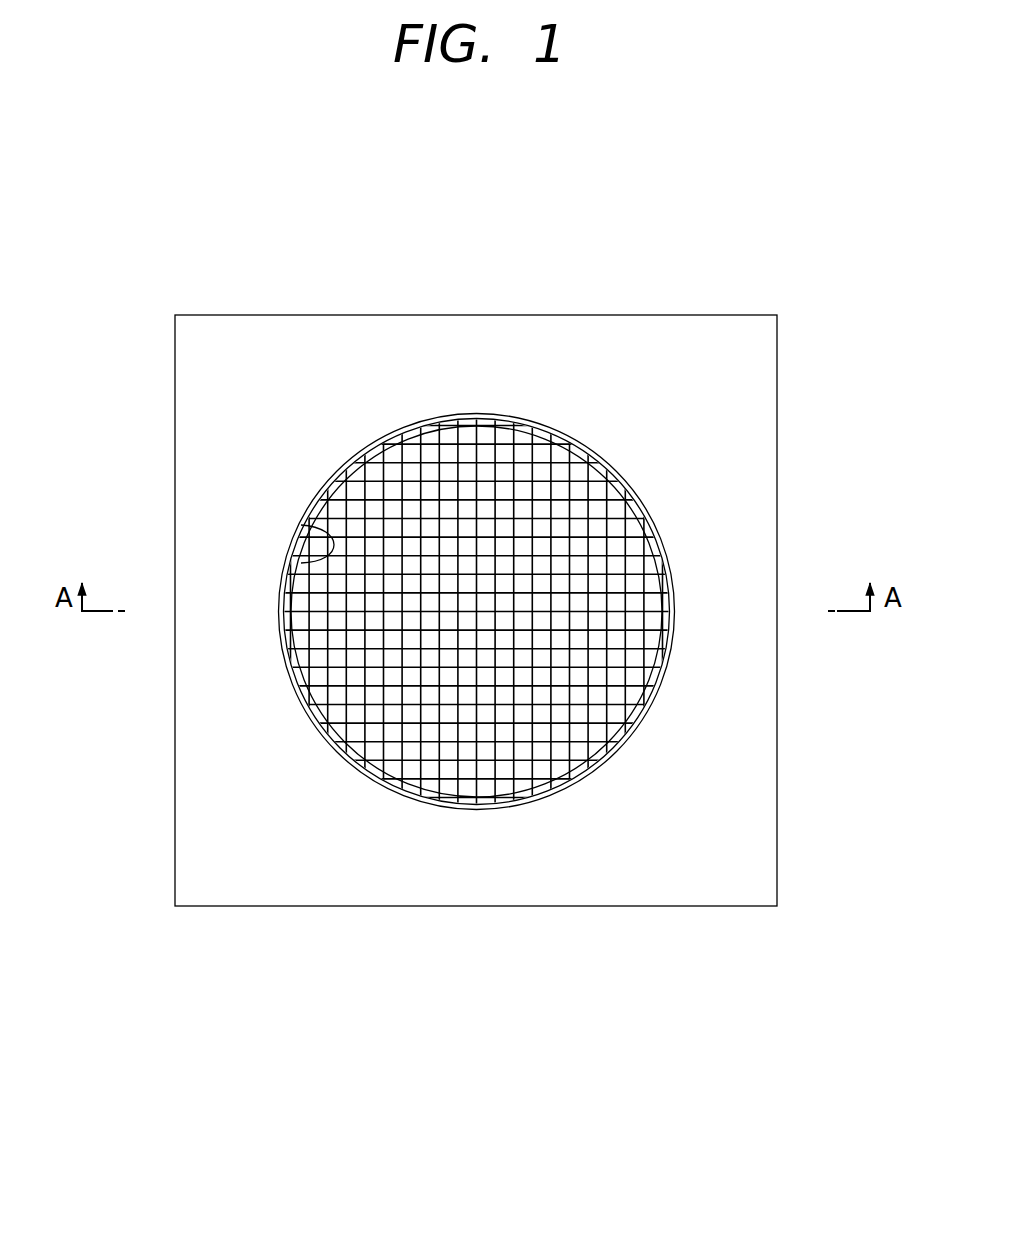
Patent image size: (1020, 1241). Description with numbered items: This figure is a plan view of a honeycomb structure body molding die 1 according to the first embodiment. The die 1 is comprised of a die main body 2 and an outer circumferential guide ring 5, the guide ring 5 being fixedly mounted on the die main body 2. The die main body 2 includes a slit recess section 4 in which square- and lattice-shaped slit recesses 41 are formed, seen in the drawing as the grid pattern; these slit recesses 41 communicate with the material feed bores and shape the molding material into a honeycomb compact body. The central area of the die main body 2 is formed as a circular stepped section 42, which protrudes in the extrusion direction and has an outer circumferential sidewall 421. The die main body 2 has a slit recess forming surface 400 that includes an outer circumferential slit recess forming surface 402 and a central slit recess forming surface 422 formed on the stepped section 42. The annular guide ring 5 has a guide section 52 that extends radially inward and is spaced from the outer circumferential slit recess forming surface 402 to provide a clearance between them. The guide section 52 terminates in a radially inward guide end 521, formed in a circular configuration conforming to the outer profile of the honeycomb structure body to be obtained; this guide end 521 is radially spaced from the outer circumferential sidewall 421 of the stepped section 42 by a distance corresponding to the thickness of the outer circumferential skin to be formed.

The honeycomb structure body molding die 1 is at (630, 257).
The die main body 2 is at (350, 655).
The slit recess section 4 is at (499, 602).
The outer circumferential guide ring 5 is at (705, 855).
The slit recesses 41 is at (447, 502).
The circular stepped section 42 is at (563, 692).
The guide section 52 is at (700, 396).
The slit recess forming surface 400 is at (436, 709).
The outer circumferential slit recess forming surface 402 is at (340, 493).
The outer circumferential sidewall 421 is at (370, 452).
The central slit recess forming surface 422 is at (505, 527).
The radially inward guide end 521 is at (300, 563).